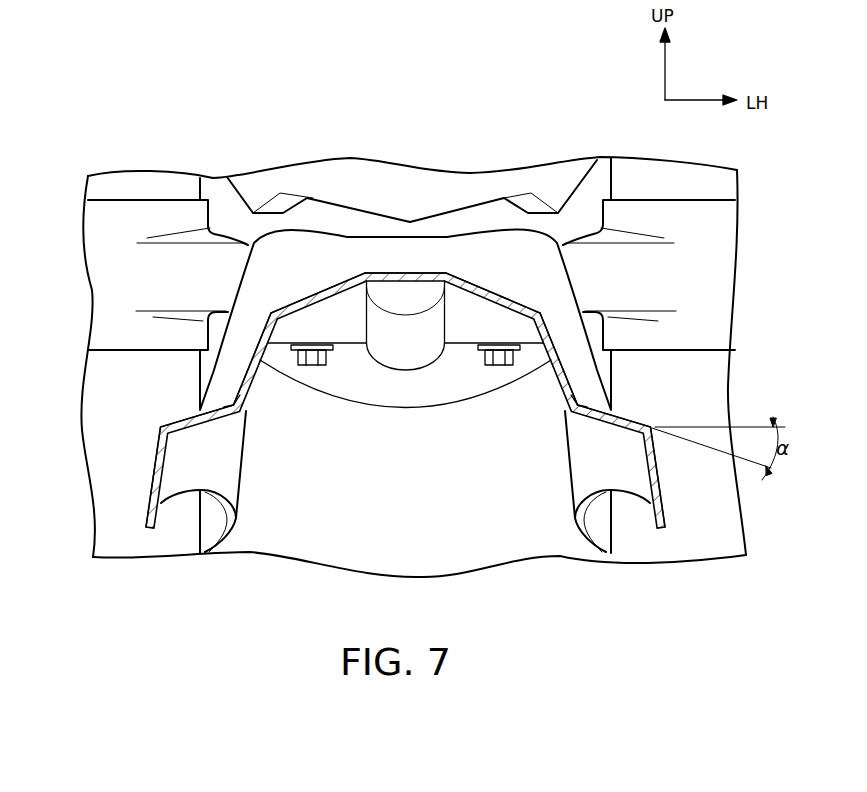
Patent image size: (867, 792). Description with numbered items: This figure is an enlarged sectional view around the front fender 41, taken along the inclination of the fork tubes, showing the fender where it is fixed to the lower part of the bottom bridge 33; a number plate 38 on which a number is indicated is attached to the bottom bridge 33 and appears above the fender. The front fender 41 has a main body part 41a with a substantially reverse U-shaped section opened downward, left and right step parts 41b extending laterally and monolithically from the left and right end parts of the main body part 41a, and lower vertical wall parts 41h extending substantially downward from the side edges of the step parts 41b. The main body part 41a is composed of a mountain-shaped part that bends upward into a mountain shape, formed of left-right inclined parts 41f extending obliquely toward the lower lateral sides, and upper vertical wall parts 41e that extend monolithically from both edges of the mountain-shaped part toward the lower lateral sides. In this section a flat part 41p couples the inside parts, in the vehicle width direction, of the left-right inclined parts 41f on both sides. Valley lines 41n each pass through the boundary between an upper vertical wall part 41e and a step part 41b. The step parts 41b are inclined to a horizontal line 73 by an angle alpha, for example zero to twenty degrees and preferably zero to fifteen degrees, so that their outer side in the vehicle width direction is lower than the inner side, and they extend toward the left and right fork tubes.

The bottom bridge 33 is at (103, 250).
The number plate 38 is at (473, 188).
The front fender 41 is at (238, 278).
The main body part 41a is at (350, 275).
The step part 41b is at (193, 412).
The upper vertical wall part 41e is at (256, 350).
The left-right inclined part 41f is at (307, 296).
The lower vertical wall part 41h is at (146, 484).
The valley line 41n is at (230, 401).
The flat part 41p is at (411, 280).
The horizontal line 73 is at (747, 426).